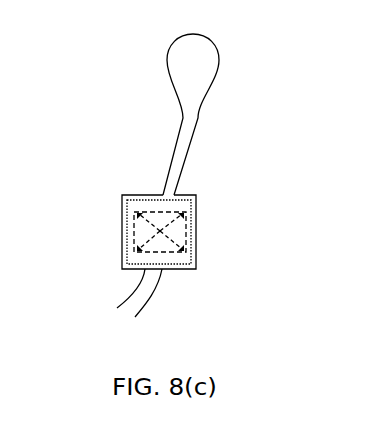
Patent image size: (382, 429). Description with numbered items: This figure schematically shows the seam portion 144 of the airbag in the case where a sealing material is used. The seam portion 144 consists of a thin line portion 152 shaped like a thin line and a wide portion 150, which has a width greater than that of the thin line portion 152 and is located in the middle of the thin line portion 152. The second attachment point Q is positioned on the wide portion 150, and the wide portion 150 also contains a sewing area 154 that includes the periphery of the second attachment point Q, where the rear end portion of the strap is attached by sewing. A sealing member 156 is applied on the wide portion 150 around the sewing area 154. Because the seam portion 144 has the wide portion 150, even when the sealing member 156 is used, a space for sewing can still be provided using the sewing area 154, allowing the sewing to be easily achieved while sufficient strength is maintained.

The seam portion 144 is at (210, 101).
The thin line portion 152 is at (196, 160).
The wide portion 150 is at (197, 235).
The sewing area 154 is at (159, 229).
The sealing member 156 is at (127, 243).
The second attachment point Q is at (161, 234).